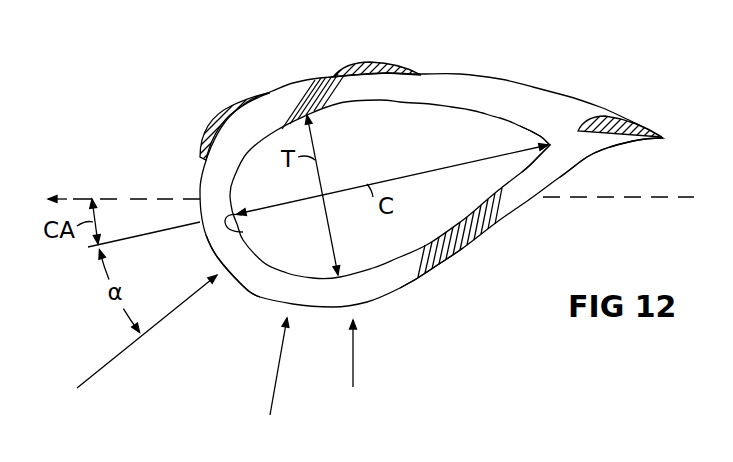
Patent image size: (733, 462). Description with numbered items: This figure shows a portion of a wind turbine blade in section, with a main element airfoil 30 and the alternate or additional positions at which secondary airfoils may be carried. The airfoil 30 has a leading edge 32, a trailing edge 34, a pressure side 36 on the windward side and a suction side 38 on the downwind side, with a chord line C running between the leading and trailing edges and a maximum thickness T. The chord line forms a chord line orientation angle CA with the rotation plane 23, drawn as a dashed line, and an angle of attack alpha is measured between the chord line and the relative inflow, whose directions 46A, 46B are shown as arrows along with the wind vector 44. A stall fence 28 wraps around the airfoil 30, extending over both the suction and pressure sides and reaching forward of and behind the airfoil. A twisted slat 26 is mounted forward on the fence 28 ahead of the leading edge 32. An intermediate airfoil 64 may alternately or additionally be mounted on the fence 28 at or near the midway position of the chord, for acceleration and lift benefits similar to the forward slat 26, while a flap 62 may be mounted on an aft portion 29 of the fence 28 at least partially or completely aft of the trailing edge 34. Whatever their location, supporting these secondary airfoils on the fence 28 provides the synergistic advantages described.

The rotation plane 23 is at (113, 198).
The slat 26 is at (230, 108).
The fence 28 is at (308, 93).
The aft portion 29 is at (594, 152).
The main element airfoil 30 is at (263, 262).
The leading edge 32 is at (243, 232).
The trailing edge 34 is at (551, 143).
The pressure side 36 is at (400, 258).
The suction side 38 is at (452, 108).
The wind vector 44 is at (353, 359).
The relative air inflow direction (inboard end) 46A is at (278, 370).
The relative air inflow direction (outboard end) 46B is at (170, 312).
The flap 62 is at (603, 122).
The intermediate airfoil 64 is at (369, 60).